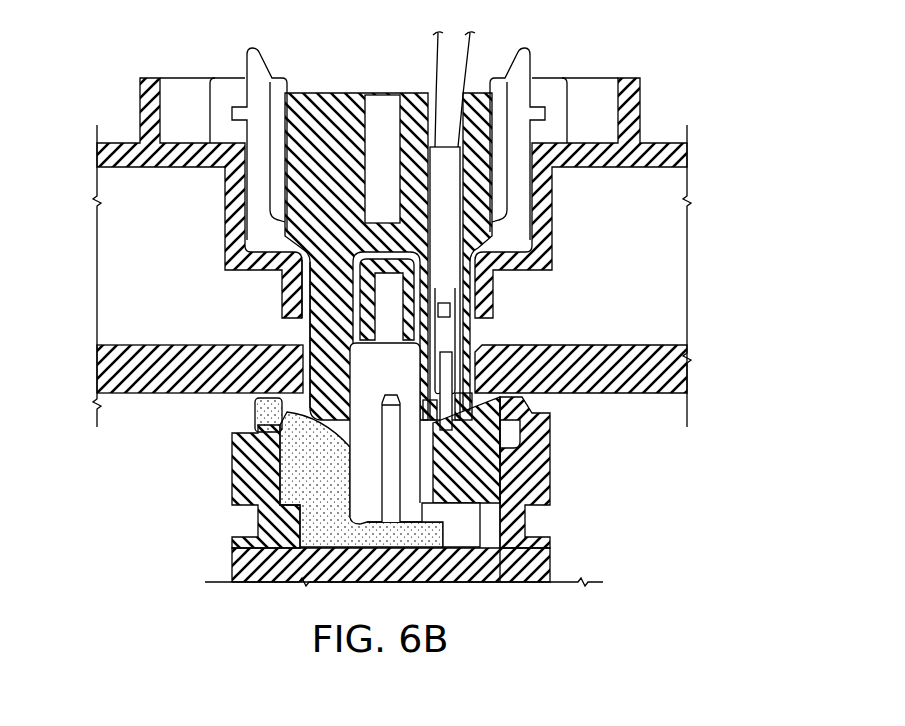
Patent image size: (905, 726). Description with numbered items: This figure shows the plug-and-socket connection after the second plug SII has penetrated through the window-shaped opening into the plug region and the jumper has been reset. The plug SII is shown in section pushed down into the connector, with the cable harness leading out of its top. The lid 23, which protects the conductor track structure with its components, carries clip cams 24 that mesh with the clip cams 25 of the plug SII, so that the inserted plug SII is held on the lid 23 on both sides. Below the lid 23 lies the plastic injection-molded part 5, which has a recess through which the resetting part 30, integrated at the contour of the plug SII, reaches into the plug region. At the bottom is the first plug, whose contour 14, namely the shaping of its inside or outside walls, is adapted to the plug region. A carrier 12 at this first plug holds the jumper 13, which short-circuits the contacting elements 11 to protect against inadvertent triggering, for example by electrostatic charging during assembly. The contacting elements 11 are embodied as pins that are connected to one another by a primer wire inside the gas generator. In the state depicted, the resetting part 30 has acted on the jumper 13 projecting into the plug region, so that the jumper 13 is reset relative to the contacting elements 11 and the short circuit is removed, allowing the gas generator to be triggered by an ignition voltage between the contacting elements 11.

The lid 23 is at (653, 143).
The clip cams 24 is at (223, 85).
The clip cams 25 is at (245, 118).
The plug SII is at (350, 93).
The resetting part 30 is at (303, 325).
The plastic injection-molded part 5 is at (168, 345).
The contour 14 is at (547, 420).
The jumper 13 is at (342, 467).
The carrier 12 is at (257, 405).
The contacting elements 11 is at (393, 473).